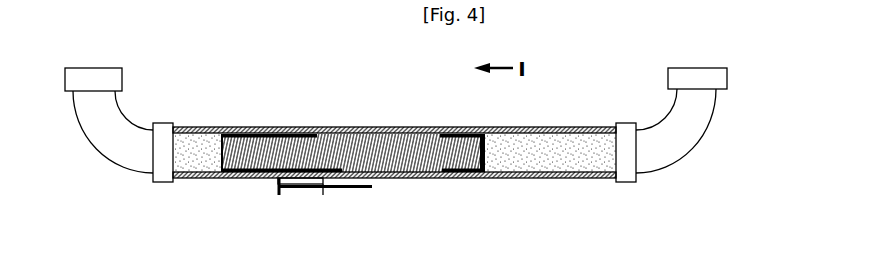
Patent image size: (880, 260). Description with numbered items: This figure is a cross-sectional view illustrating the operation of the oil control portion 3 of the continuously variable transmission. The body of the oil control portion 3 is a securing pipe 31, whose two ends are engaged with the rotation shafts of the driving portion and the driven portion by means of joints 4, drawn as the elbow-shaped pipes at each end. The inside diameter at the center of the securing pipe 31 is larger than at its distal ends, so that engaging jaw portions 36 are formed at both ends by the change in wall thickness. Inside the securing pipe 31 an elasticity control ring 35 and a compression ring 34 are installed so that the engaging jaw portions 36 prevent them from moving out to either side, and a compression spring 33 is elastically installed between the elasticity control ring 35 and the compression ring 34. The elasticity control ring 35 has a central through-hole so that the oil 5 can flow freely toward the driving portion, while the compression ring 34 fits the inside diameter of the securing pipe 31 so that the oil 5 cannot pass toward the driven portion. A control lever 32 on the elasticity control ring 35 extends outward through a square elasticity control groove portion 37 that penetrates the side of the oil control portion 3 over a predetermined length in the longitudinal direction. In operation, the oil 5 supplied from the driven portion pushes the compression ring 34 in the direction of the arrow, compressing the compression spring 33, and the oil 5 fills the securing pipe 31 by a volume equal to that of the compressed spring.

The oil control portion 3 is at (394, 151).
The joint 4 is at (108, 150).
The oil 5 is at (193, 160).
The securing pipe 31 is at (394, 157).
The control lever 32 is at (343, 190).
The compression spring 33 is at (413, 168).
The compression ring 34 is at (462, 178).
The elasticity control ring 35 is at (273, 128).
The engaging jaw portion 36 is at (572, 130).
The elasticity control groove portion 37 is at (300, 186).